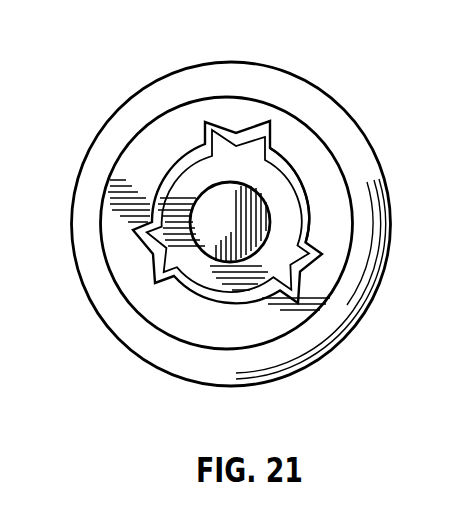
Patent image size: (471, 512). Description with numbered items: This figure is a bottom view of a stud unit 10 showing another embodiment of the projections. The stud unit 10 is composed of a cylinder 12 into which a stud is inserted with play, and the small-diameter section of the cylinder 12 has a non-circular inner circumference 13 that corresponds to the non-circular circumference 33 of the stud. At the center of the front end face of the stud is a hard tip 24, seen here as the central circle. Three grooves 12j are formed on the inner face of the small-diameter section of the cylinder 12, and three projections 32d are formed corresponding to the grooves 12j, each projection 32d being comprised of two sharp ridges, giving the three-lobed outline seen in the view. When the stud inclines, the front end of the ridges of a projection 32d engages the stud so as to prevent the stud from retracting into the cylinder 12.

The stud unit 10 is at (92, 103).
The cylinder 12 is at (172, 110).
The grooves 12j is at (240, 131).
The inner circumference 13 is at (300, 200).
The hard tip 24 is at (228, 240).
The projections 32d is at (268, 152).
The non-circular circumference 33 is at (196, 280).